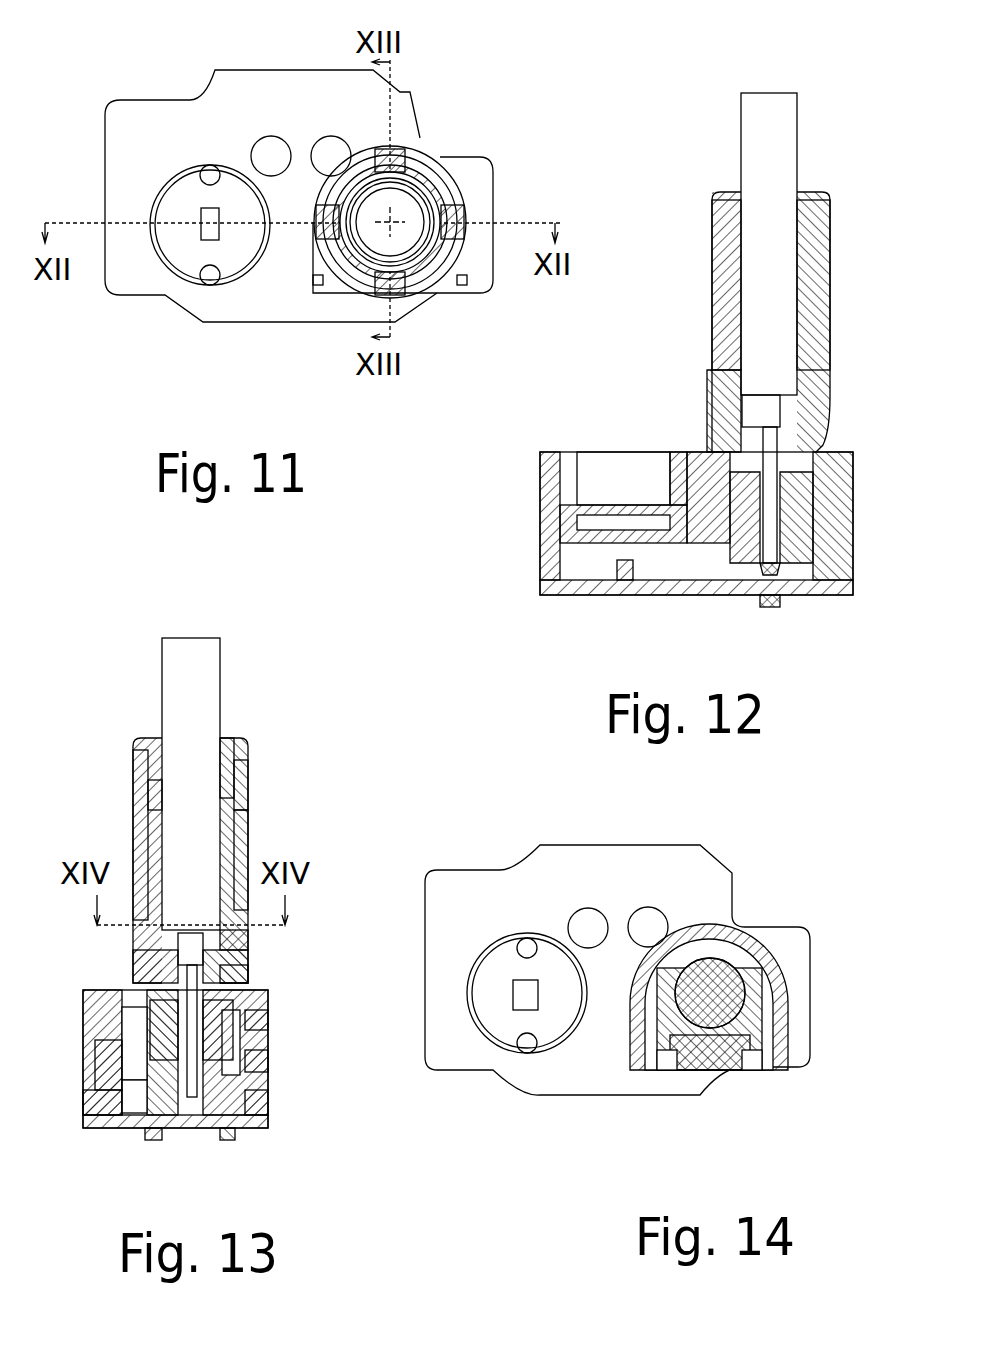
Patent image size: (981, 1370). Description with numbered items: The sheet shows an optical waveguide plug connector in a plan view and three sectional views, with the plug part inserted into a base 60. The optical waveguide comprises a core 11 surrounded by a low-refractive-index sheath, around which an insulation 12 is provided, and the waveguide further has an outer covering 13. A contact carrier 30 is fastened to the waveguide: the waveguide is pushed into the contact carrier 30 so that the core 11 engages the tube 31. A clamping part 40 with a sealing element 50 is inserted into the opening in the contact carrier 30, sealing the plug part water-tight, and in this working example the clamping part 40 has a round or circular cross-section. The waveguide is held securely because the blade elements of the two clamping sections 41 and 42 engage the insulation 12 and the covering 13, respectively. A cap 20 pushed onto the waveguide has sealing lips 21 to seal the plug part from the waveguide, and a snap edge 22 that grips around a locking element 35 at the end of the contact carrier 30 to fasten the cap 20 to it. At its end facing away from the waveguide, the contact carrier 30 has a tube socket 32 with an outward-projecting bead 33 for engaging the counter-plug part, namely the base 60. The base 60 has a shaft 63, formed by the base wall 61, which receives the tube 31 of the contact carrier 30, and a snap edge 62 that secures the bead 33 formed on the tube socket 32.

In FIG. 12, the core 11 is at (712, 430).
In FIG. 13, the core 11 is at (137, 985).
In FIG. 12, the insulation 12 is at (712, 413).
In FIG. 13, the insulation 12 is at (137, 957).
In FIG. 14, the insulation 12 is at (693, 948).
In FIG. 12, the covering 13 is at (768, 145).
In FIG. 13, the covering 13 is at (190, 708).
In FIG. 11, the cap 20 is at (420, 158).
In FIG. 12, the cap 20 is at (717, 208).
In FIG. 13, the cap 20 is at (137, 748).
In FIG. 13, the sealing lips 21 is at (250, 763).
In FIG. 13, the snap edge 22 is at (235, 807).
In FIG. 11, the contact carrier 30 is at (333, 287).
In FIG. 12, the contact carrier 30 is at (712, 310).
In FIG. 13, the contact carrier 30 is at (137, 830).
In FIG. 14, the contact carrier 30 is at (713, 940).
In FIG. 13, the tube 31 is at (97, 1074).
In FIG. 13, the tube socket 32 is at (150, 1023).
In FIG. 13, the bead 33 is at (245, 1025).
In FIG. 13, the locking element 35 is at (137, 793).
In FIG. 12, the clamping part 40 is at (712, 368).
In FIG. 13, the clamping part 40 is at (260, 950).
In FIG. 14, the clamping part 40 is at (682, 1082).
In FIG. 13, the clamping section 41 is at (260, 915).
In FIG. 13, the clamping section 42 is at (262, 965).
In FIG. 13, the sealing element 50 is at (250, 838).
In FIG. 14, the sealing element 50 is at (755, 1082).
In FIG. 11, the base 60 is at (213, 125).
In FIG. 13, the base 60 is at (97, 1103).
In FIG. 14, the base 60 is at (600, 1085).
In FIG. 13, the base wall 61 is at (270, 1060).
In FIG. 13, the snap edge 62 is at (270, 1015).
In FIG. 13, the shaft 63 is at (258, 1100).